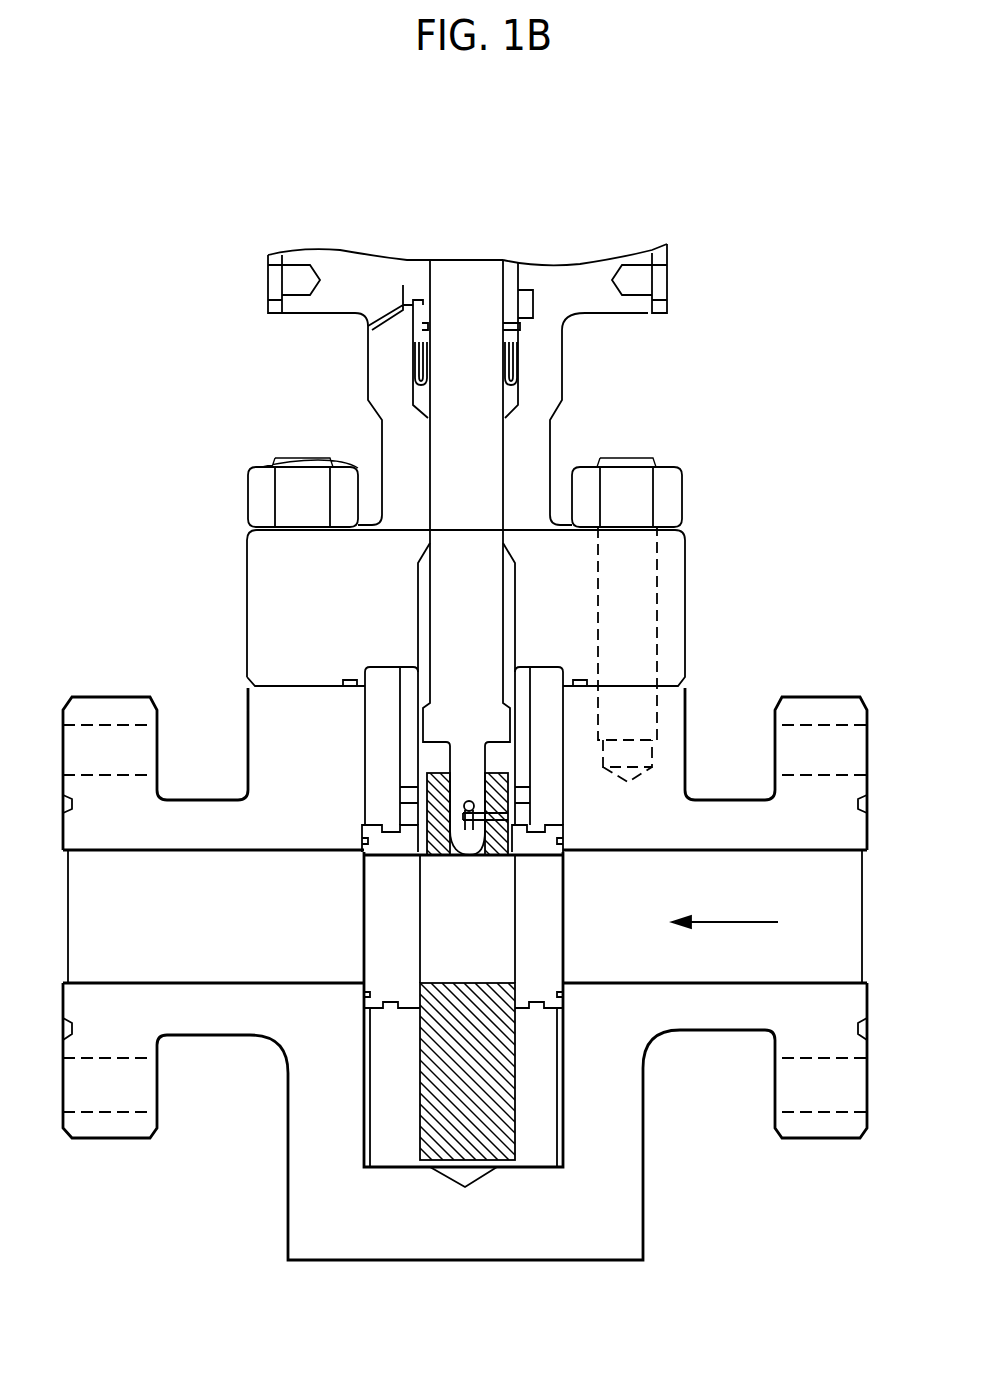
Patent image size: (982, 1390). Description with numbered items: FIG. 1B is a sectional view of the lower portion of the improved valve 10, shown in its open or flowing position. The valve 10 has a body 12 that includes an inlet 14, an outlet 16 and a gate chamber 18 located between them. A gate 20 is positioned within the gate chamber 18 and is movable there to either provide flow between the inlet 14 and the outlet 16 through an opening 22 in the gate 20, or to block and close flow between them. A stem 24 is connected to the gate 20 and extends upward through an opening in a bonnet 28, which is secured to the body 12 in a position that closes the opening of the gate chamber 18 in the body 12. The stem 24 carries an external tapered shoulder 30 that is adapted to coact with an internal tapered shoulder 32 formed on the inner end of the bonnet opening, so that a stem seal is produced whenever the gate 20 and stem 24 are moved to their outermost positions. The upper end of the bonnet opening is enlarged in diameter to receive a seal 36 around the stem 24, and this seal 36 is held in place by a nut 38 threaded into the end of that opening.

The valve 10 is at (708, 523).
The body 12 is at (644, 1218).
The inlet 14 is at (665, 967).
The outlet 16 is at (206, 963).
The gate chamber 18 is at (552, 1092).
The gate 20 is at (432, 1096).
The opening 22 is at (498, 983).
The stem 24 is at (505, 437).
The bonnet 28 is at (685, 583).
The external tapered shoulder 30 is at (515, 704).
The internal tapered shoulder 32 is at (418, 567).
The seal 36 is at (417, 363).
The nut 38 is at (520, 298).